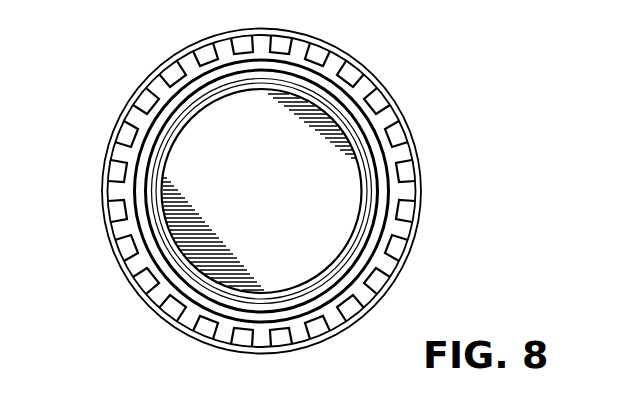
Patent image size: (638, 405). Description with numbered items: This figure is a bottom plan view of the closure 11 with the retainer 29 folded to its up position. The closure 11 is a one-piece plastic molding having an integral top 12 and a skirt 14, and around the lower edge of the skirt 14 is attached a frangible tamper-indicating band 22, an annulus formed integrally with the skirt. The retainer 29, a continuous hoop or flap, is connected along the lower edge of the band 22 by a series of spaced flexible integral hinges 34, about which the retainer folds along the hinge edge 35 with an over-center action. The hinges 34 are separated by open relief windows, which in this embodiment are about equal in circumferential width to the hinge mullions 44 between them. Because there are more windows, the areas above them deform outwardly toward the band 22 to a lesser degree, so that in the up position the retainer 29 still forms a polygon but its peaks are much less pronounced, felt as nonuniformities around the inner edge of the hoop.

The closure 11 is at (434, 66).
The top 12 is at (268, 225).
The skirt 14 is at (110, 142).
The tamper-indicating band 22 is at (393, 224).
The retainer 29 is at (379, 256).
The hinges 34 is at (413, 142).
The hinge edge 35 is at (330, 57).
The mullions 44 is at (138, 267).